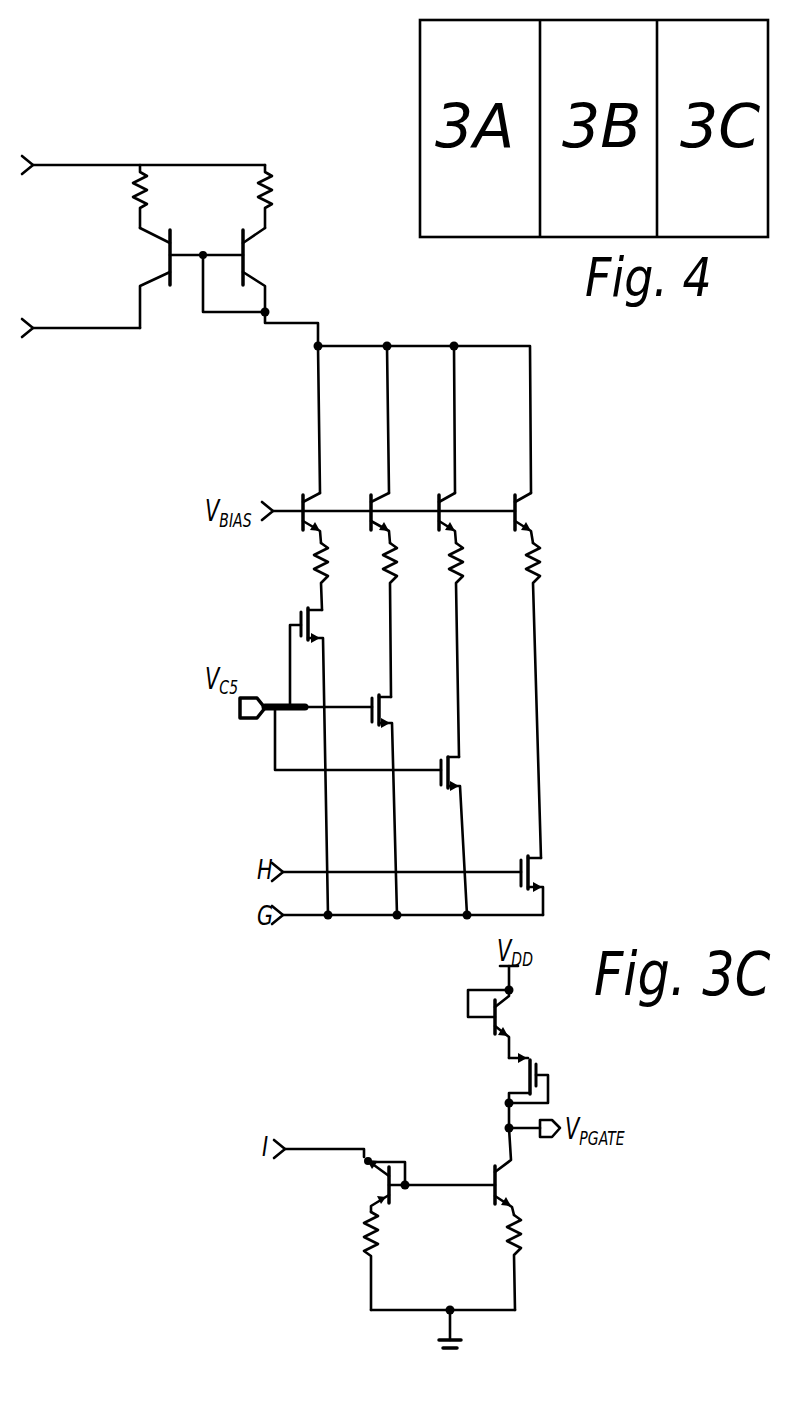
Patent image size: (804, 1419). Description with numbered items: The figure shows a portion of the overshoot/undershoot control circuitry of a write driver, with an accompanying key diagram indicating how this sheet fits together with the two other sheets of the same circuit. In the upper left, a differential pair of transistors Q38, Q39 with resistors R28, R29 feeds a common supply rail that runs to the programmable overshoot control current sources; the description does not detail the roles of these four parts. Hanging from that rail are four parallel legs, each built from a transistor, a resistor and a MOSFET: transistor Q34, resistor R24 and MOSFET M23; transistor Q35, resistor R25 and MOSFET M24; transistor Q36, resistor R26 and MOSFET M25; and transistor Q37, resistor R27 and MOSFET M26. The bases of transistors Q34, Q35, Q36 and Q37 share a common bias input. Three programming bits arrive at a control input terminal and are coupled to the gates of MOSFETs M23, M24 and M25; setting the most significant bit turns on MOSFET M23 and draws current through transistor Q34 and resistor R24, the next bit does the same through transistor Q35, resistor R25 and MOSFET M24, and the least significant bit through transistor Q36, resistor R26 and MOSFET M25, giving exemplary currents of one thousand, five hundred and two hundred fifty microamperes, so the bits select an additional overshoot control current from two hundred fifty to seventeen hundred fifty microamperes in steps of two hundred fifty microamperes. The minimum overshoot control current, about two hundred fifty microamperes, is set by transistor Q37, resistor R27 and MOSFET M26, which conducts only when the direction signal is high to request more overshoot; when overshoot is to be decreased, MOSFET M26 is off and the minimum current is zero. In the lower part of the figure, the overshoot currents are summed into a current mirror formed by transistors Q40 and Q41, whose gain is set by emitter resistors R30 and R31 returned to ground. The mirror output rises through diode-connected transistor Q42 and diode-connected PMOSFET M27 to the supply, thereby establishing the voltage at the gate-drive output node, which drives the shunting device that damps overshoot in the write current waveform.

The resistor R28 is at (163, 196).
The resistor R29 is at (290, 195).
The transistor Q38 is at (155, 278).
The transistor Q39 is at (248, 270).
The transistor Q34 is at (293, 498).
The transistor Q35 is at (364, 498).
The transistor Q36 is at (431, 498).
The transistor Q37 is at (546, 514).
The resistor R24 is at (344, 575).
The resistor R25 is at (412, 617).
The resistor R26 is at (479, 648).
The resistor R27 is at (556, 699).
The MOSFET M23 is at (331, 760).
The MOSFET M24 is at (407, 801).
The MOSFET M25 is at (477, 834).
The MOSFET M26 is at (557, 881).
The diode-connected PMOSFET M27 is at (548, 1086).
The diode-connected transistor Q42 is at (513, 1024).
The transistor Q41 is at (528, 1171).
The transistor Q40 is at (368, 1184).
The resistor R30 is at (353, 1260).
The resistor R31 is at (539, 1262).